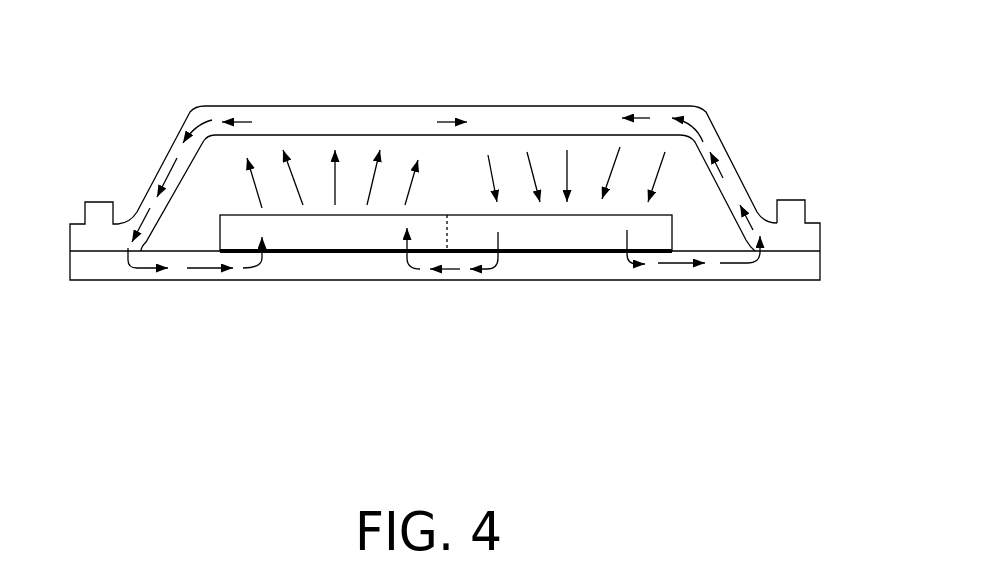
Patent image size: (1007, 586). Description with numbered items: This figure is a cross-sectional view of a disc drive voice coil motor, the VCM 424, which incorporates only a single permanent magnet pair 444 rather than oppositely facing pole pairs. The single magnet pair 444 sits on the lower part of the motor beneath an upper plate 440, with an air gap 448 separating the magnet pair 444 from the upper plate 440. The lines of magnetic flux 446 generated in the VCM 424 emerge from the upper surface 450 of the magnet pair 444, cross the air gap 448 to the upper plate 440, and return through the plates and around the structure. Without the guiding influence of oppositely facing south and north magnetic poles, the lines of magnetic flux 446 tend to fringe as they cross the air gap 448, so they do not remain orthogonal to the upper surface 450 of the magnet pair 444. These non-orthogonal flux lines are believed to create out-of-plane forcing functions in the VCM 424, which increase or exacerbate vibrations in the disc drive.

The VCM 424 is at (472, 249).
The upper plate 440 is at (575, 117).
The single magnet pair 444 is at (373, 253).
The lines of magnetic flux 446 is at (293, 167).
The air gap 448 is at (672, 189).
The upper surface 450 is at (510, 215).